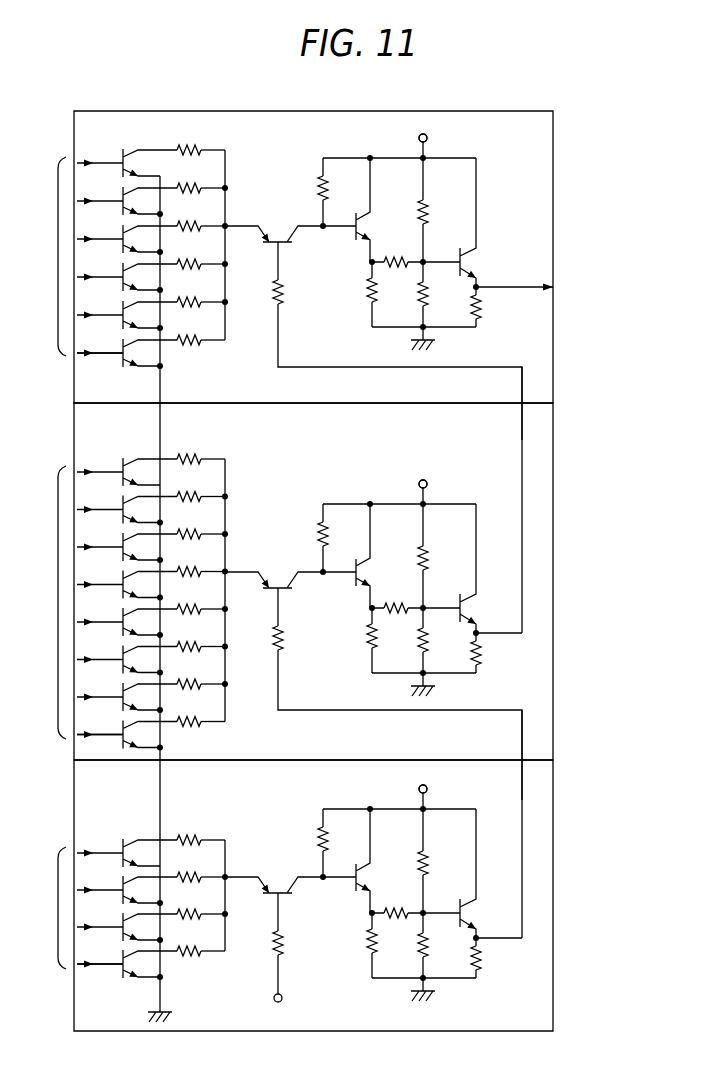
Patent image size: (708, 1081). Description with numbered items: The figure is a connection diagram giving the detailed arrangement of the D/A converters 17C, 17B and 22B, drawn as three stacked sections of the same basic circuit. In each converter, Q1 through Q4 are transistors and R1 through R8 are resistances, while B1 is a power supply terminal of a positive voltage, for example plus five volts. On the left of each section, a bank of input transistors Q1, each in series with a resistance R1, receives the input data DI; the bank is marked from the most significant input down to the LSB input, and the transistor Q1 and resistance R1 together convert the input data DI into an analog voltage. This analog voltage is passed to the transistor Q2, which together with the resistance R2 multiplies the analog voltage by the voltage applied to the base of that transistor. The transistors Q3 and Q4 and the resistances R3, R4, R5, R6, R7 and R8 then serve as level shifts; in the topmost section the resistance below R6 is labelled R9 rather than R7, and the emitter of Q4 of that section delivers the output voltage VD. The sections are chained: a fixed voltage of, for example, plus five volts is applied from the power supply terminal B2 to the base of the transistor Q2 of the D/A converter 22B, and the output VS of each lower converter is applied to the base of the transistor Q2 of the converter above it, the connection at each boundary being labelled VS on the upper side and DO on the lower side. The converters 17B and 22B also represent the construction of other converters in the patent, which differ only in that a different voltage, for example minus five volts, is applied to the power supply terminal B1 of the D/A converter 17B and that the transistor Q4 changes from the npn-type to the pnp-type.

The transistor Q1 is at (127, 150).
The resistance R1 is at (203, 150).
The transistor Q2 is at (270, 238).
The resistance R2 is at (281, 290).
The resistance R3 is at (326, 203).
The transistor Q3 is at (364, 220).
The resistance R4 is at (369, 302).
The resistance R5 is at (392, 259).
The resistance R6 is at (426, 213).
The resistance R7 is at (428, 640).
The resistance R8 is at (479, 310).
The resistor R9 is at (428, 292).
The transistor Q4 is at (470, 256).
The power supply terminal B1 is at (434, 458).
The power supply terminal B2 is at (278, 1014).
The output voltage terminal VD is at (530, 290).
The output VS is at (505, 564).
The data output of converter stage DO is at (505, 601).
The input data DI is at (44, 563).
The least significant bit input LSB is at (100, 645).
The D/A converter 17C is at (553, 205).
The D/A converter 17B is at (553, 515).
The D/A converter 22B is at (554, 990).